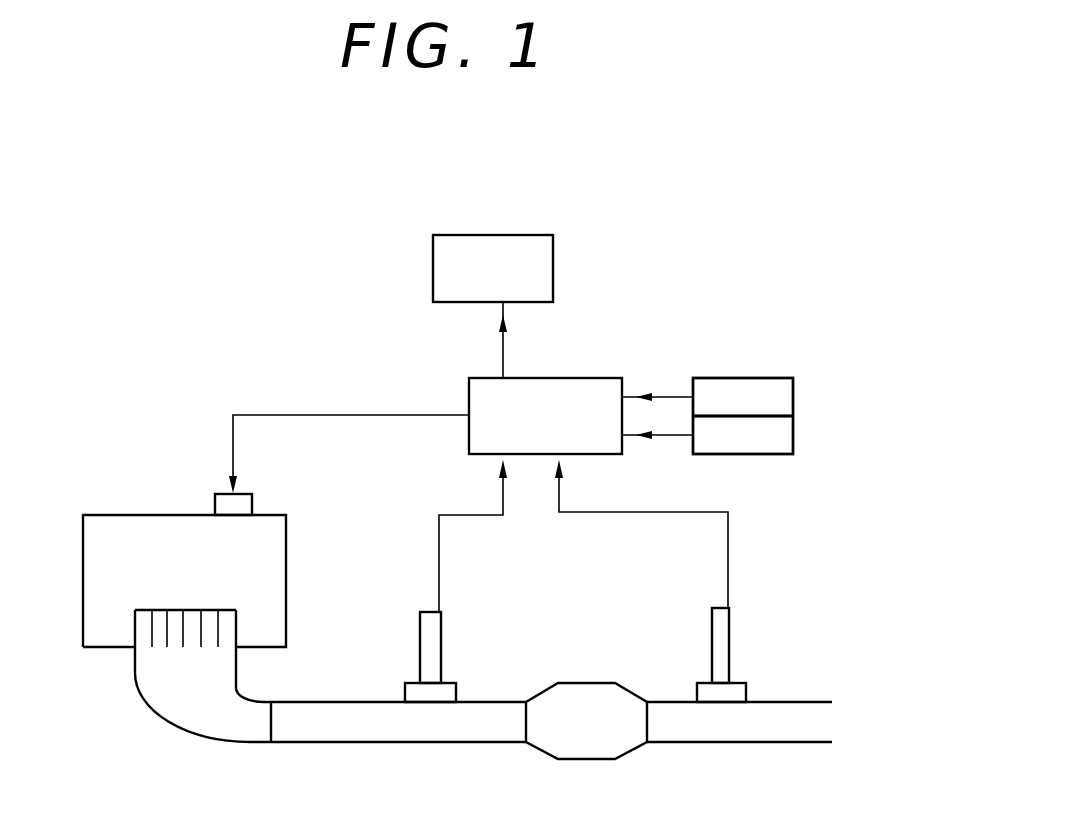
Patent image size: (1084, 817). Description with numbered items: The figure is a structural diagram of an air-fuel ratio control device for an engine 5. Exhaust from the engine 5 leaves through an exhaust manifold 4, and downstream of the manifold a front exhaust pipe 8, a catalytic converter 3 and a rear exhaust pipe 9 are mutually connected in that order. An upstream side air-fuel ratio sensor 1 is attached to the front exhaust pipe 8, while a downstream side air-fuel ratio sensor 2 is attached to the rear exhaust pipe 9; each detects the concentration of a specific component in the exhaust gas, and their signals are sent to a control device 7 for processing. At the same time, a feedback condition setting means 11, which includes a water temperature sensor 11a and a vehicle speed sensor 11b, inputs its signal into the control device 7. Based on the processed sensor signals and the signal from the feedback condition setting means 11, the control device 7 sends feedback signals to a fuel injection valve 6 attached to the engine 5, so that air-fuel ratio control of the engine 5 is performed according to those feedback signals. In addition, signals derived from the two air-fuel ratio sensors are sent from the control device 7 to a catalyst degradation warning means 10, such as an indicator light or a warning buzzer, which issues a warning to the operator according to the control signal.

The upstream side air-fuel ratio sensor 1 is at (435, 627).
The downstream side air-fuel ratio sensor 2 is at (723, 627).
The catalytic converter 3 is at (587, 747).
The exhaust manifold 4 is at (197, 723).
The engine 5 is at (123, 520).
The fuel injection valve 6 is at (222, 502).
The control device 7 is at (550, 383).
The front exhaust pipe 8 is at (492, 732).
The rear exhaust pipe 9 is at (767, 717).
The catalyst degradation warning means 10 is at (493, 268).
The feedback condition setting means 11 is at (805, 378).
The water temperature sensor 11a is at (743, 383).
The vehicle speed sensor 11b is at (745, 448).